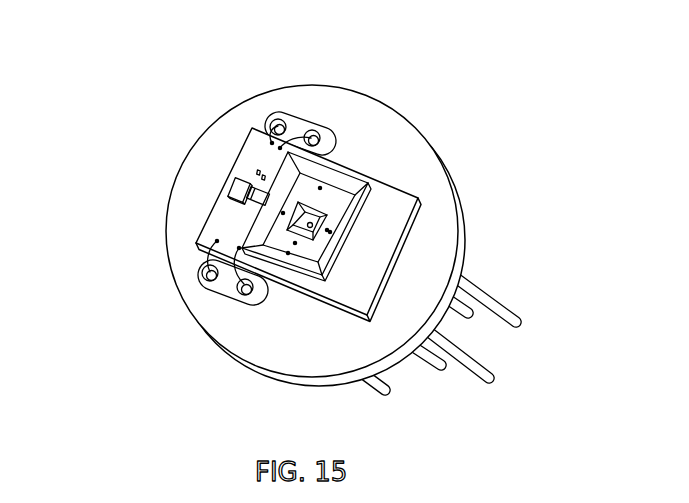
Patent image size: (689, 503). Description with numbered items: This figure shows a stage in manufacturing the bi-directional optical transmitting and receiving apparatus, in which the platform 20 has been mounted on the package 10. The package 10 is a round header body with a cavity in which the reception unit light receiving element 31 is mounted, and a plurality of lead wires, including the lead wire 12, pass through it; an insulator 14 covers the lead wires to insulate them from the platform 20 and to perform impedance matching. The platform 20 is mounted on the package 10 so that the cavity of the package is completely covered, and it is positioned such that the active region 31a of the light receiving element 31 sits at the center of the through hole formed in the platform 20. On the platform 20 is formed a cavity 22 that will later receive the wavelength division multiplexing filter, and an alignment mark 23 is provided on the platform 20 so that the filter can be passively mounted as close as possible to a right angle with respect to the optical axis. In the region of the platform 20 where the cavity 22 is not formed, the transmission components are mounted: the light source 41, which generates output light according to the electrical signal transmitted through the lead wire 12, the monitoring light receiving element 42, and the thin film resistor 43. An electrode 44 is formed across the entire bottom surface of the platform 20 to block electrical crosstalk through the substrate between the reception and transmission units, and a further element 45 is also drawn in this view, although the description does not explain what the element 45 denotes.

The package 10 is at (403, 128).
The lead wire 12 is at (210, 282).
The insulator 14 is at (230, 290).
The platform 20 is at (252, 156).
The cavity 22 is at (343, 196).
The alignment mark 23 is at (315, 202).
The reception unit light receiving element 31 is at (309, 236).
The active region 31a is at (311, 227).
The light source 41 is at (246, 204).
The monitoring light receiving element 42 is at (231, 190).
The thin film resistor 43 is at (257, 172).
The electrode 44 is at (262, 178).
The bonding wire 45 is at (271, 143).